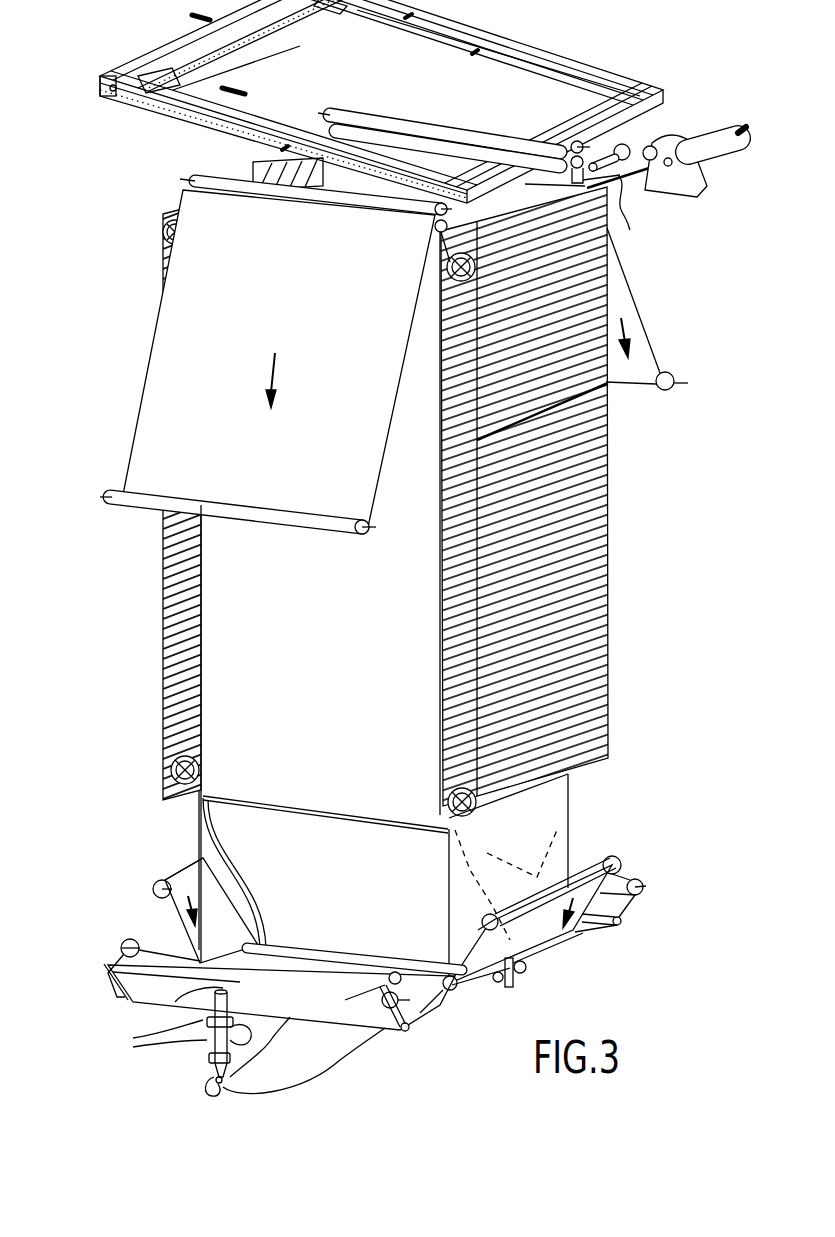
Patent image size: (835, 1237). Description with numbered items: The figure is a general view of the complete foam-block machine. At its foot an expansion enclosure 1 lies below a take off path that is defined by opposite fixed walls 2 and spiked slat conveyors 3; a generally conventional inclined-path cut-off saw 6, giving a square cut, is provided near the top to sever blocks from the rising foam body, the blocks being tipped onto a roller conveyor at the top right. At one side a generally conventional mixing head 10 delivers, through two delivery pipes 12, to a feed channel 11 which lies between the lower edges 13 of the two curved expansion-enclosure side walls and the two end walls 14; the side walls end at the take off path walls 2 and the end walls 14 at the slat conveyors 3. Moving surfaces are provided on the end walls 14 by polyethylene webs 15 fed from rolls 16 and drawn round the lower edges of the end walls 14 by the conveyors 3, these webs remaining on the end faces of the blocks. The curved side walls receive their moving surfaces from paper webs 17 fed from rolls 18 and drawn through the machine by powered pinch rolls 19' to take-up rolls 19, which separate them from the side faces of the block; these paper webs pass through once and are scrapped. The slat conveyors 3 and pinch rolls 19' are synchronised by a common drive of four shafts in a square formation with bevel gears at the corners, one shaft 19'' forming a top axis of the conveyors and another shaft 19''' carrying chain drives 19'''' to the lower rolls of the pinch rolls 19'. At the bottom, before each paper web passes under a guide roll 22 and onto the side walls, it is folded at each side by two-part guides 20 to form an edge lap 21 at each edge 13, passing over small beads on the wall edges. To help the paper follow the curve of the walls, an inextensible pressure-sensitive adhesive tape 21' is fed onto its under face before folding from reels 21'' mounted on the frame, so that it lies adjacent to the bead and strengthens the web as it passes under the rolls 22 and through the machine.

The expansion enclosure 1 is at (384, 879).
The fixed walls 2 is at (275, 398).
The spiked slat conveyors 3 is at (613, 566).
The inclined-path cut-off saw 6 is at (190, 63).
The mixing head 10 is at (205, 1054).
The feed channel 11 is at (505, 993).
The delivery pipes 12 is at (345, 1053).
The edges of expansion-enclosure side walls 13 is at (506, 885).
The end walls 14 is at (200, 843).
The polyethylene webs 15 is at (172, 923).
The rolls 16 is at (154, 889).
The paper webs 17 is at (587, 935).
The rolls 18 is at (643, 889).
The take-up rolls 19 is at (399, 394).
The powered pinch rolls 19' is at (417, 235).
The shaft 19'' is at (601, 205).
The shaft 19''' is at (654, 143).
The chain drives 19'''' is at (691, 180).
The two-part guides 20 is at (283, 990).
The edge lap 21 is at (246, 874).
The pressure-sensitive adhesive tape 21' is at (337, 1002).
The reels 21'' is at (409, 975).
The guide roll 22 is at (296, 954).